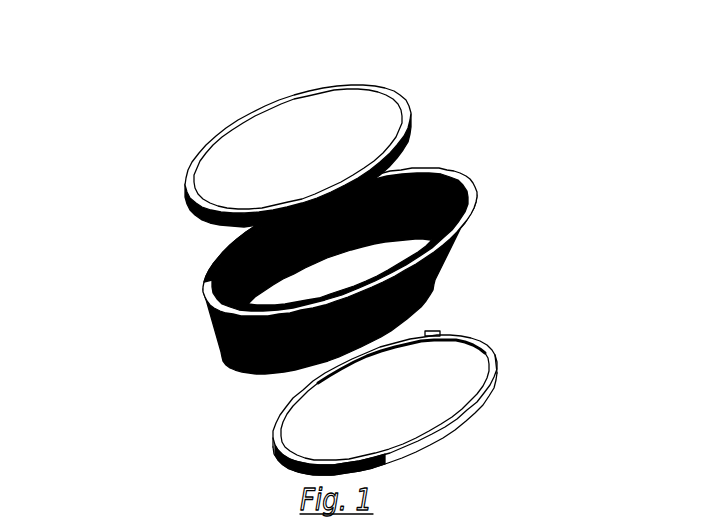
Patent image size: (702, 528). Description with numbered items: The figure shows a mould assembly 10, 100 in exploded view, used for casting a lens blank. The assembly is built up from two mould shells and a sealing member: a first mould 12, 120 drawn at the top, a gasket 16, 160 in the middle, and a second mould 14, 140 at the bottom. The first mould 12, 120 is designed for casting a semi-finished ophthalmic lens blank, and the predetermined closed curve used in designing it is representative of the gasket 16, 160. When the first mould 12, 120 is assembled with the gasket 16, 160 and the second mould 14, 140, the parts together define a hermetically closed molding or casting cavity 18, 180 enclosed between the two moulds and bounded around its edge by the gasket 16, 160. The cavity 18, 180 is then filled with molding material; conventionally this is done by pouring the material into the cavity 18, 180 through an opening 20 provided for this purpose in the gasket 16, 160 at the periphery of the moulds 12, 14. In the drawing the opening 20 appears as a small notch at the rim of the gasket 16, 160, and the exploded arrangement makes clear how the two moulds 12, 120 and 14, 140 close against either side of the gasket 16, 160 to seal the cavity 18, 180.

The mould assembly 10 is at (324, 264).
The container closure assembly 100 is at (224, 95).
The mould 12 is at (230, 156).
The first mould 120 is at (208, 172).
The mould 14 is at (334, 403).
The second mould 140 is at (265, 433).
The gasket 16 is at (334, 271).
The gasket 160 is at (215, 332).
The molding cavity 18 is at (405, 242).
The casting cavity 180 is at (341, 228).
The opening 20 is at (419, 326).